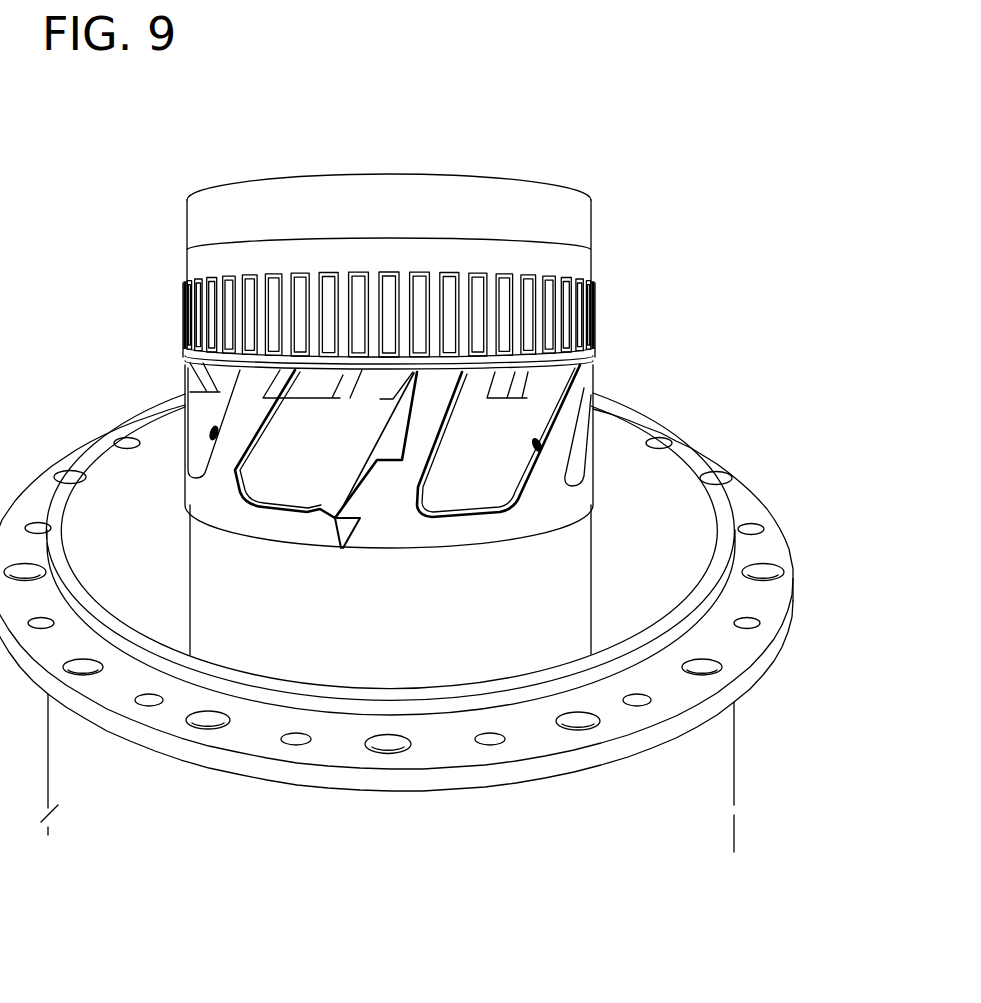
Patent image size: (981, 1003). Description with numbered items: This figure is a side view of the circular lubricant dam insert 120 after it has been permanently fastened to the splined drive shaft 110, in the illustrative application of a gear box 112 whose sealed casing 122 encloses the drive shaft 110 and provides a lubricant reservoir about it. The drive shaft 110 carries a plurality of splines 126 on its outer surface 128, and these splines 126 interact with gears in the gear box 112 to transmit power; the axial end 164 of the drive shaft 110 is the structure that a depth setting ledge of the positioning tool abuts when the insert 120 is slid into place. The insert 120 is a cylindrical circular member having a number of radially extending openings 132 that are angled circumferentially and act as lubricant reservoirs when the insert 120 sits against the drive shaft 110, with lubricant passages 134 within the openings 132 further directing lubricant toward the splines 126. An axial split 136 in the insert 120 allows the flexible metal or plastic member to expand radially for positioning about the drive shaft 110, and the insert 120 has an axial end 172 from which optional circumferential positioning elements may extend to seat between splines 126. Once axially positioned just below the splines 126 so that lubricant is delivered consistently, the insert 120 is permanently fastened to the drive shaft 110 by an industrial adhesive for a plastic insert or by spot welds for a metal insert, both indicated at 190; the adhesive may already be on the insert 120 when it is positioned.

The splined drive shaft 110 is at (594, 566).
The gear box 112 is at (703, 628).
The circular lubricant dam insert 120 is at (567, 413).
The casing 122 is at (760, 522).
The splines 126 is at (565, 333).
The outer surface 128 is at (585, 228).
The radially extending openings 132 is at (596, 444).
The lubricant passages 134 is at (308, 383).
The axial split 136 is at (343, 543).
The axial end 164 is at (589, 196).
The axial end 172 is at (594, 358).
The industrial adhesive or spot welds 190 is at (540, 445).